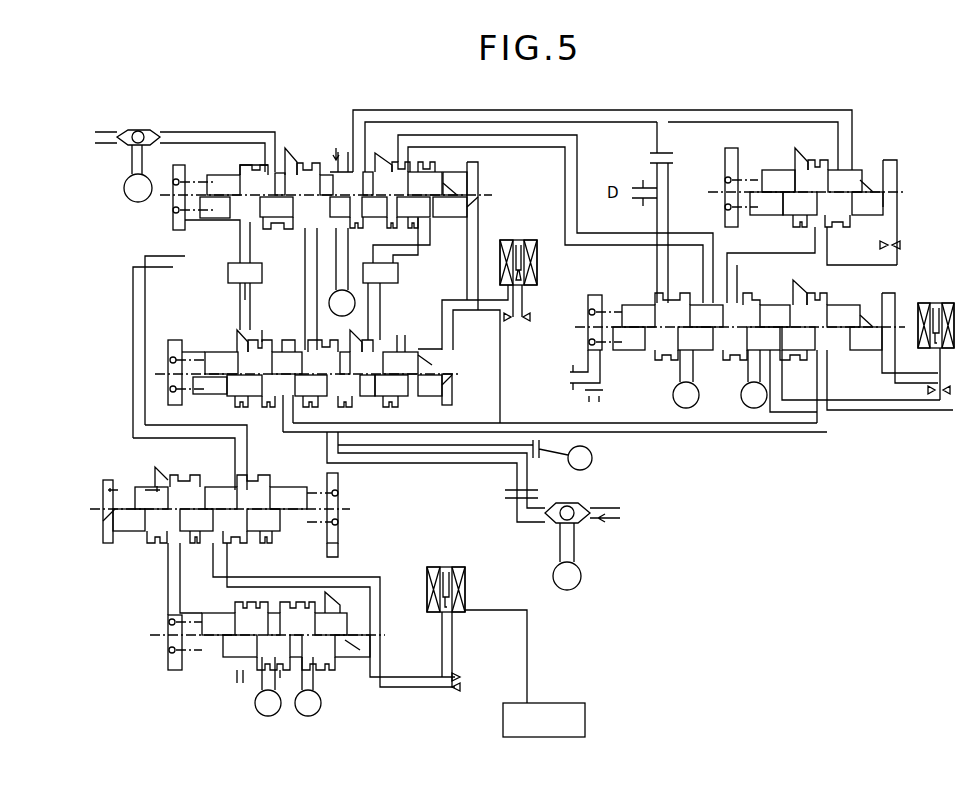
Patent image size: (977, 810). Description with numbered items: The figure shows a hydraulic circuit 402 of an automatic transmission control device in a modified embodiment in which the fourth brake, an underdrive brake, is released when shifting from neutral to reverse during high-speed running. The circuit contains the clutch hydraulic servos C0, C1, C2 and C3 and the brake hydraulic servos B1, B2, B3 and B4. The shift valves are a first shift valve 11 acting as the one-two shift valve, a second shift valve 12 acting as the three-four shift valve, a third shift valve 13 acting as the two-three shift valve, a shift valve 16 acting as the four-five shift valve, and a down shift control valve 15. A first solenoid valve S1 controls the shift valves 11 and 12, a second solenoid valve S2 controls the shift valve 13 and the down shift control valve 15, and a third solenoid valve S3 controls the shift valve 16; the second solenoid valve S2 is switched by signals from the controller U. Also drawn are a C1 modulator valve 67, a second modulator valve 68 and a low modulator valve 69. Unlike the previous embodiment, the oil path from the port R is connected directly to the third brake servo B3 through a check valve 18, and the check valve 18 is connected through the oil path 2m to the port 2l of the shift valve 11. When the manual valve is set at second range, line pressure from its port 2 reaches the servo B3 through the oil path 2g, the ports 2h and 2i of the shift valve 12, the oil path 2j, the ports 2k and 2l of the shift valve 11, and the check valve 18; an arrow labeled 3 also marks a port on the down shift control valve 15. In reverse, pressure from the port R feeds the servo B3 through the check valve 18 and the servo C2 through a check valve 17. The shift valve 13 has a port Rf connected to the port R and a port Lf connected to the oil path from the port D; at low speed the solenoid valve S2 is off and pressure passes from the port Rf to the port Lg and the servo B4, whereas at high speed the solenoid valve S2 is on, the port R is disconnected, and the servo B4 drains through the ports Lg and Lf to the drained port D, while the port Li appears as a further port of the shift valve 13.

The hydraulic circuit 402 is at (390, 62).
The check valve 18 is at (150, 130).
The oil path 2m is at (218, 133).
The port 2l is at (265, 180).
The first shift valve 11 is at (491, 173).
The C1 modulator valve 67 is at (893, 152).
The port 2k is at (240, 233).
The low modulator valve 69 is at (270, 276).
The second modulator valve 68 is at (405, 271).
The oil path 2j is at (256, 290).
The port 2i is at (265, 340).
The port 2 is at (179, 335).
The second shift valve 12 is at (464, 367).
The shift valve 16 is at (895, 285).
The port 2h is at (284, 398).
The oil path 2g is at (555, 472).
The check valve 17 is at (577, 504).
The down shift control valve 15 is at (349, 495).
The third shift valve 13 is at (388, 604).
The passage 3 is at (153, 485).
The first solenoid valve S1 is at (536, 238).
The second solenoid valve S2 is at (468, 568).
The third solenoid valve S3 is at (948, 302).
The controller U is at (583, 705).
The first brake hydraulic servo B1 is at (686, 379).
The second brake hydraulic servo B2 is at (466, 326).
The third brake hydraulic servo B3 is at (138, 173).
The fourth brake hydraulic servo B4 is at (268, 686).
The third clutch hydraulic servo C0 is at (562, 455).
The first clutch hydraulic servo C1 is at (754, 379).
The second clutch hydraulic servo C2 is at (567, 556).
The fourth clutch hydraulic servo C3 is at (308, 686).
The port Rf is at (236, 676).
The port R is at (243, 690).
The port D is at (291, 685).
The port Lg is at (260, 668).
The port Lf is at (288, 666).
The port Li is at (314, 666).